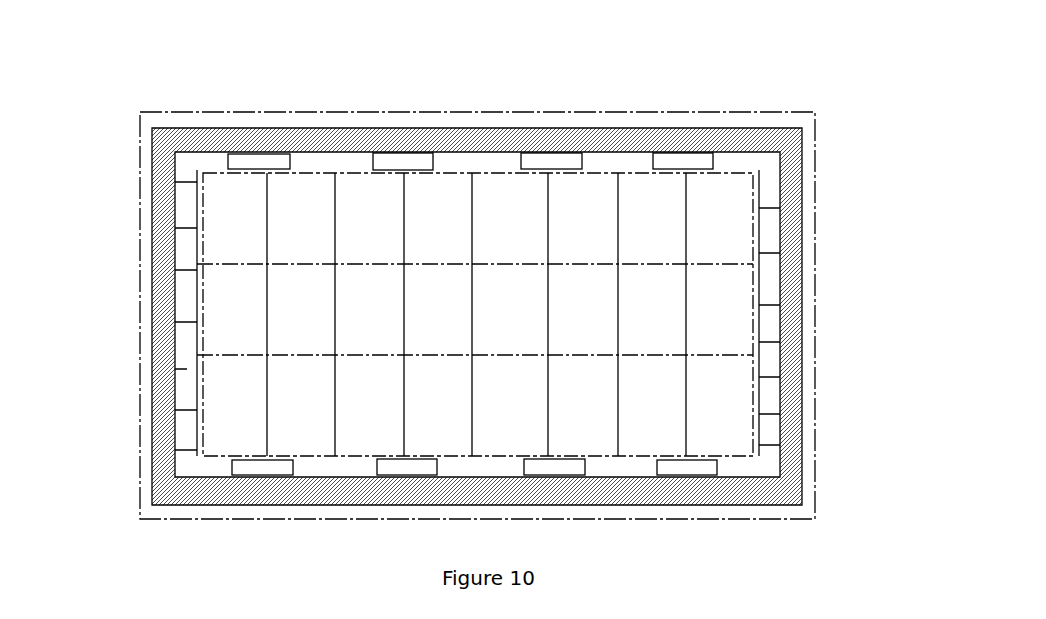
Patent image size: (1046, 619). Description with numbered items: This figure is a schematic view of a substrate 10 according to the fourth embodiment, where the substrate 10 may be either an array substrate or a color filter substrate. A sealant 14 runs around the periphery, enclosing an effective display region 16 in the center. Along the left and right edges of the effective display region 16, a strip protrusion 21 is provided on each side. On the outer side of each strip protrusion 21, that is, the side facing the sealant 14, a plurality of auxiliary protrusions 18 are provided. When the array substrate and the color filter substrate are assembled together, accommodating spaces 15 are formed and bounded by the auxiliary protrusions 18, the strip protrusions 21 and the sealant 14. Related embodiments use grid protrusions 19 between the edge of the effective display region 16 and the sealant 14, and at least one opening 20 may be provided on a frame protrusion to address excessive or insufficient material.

The substrate 10 is at (885, 242).
The sealant 14 is at (798, 148).
The accommodating space 15 is at (277, 160).
The effective display region 16 is at (714, 344).
The auxiliary protrusion 18 is at (182, 226).
The grid protrusion 19 is at (412, 152).
The opening 20 is at (199, 168).
The strip protrusion 21 is at (197, 355).